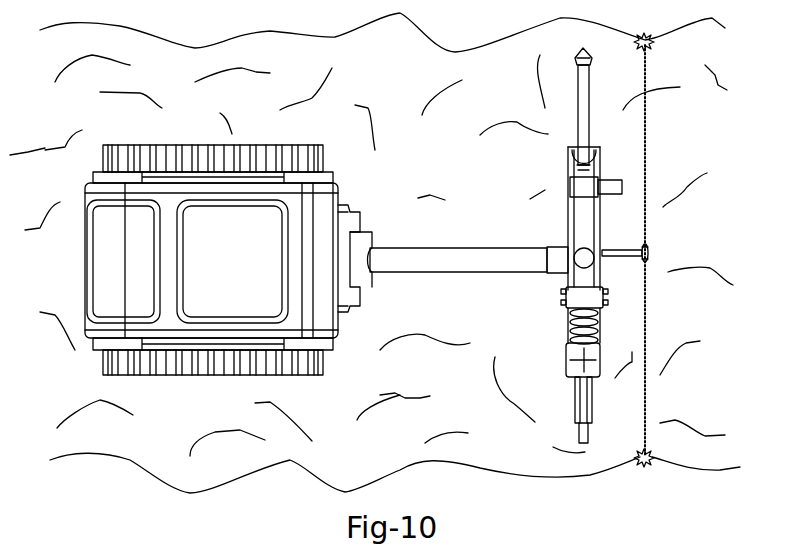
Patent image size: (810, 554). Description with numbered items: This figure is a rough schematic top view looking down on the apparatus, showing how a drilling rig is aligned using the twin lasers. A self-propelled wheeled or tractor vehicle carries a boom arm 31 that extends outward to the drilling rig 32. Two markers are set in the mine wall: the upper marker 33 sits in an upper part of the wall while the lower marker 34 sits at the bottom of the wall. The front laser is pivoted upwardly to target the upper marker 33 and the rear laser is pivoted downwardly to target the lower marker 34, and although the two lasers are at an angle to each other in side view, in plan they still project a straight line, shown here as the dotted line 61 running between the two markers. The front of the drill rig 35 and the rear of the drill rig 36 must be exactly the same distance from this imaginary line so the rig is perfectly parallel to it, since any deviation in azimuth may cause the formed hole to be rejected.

The boom arm 31 is at (463, 256).
The drilling rig 32 is at (551, 295).
The upper marker 33 is at (654, 45).
The lower marker 34 is at (651, 449).
The front of the drill rig 35 is at (565, 141).
The rear of the drill rig 36 is at (564, 378).
The pivot axis 61 is at (648, 130).